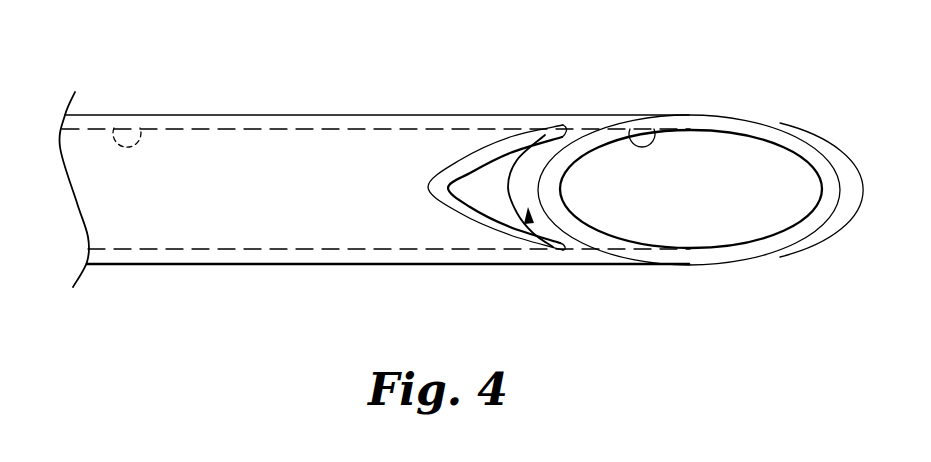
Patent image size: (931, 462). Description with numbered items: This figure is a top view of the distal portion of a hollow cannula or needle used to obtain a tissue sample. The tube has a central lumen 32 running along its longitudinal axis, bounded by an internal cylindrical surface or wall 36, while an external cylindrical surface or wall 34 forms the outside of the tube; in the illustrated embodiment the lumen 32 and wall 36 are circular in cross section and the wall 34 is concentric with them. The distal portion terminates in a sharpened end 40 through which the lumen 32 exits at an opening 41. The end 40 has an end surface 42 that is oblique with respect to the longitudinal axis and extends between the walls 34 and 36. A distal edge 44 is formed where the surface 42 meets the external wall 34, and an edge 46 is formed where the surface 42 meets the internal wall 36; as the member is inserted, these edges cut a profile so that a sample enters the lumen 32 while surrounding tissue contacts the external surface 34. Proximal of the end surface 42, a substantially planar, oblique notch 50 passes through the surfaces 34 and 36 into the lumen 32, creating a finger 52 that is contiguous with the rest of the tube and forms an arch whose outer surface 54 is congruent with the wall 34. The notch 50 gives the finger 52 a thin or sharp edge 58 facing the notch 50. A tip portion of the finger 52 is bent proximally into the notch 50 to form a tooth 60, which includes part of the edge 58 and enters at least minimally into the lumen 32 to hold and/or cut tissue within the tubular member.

The central lumen 32 is at (258, 175).
The external cylindrical surface or wall 34 is at (167, 115).
The internal cylindrical surface or wall 36 is at (121, 113).
The end 40 is at (706, 296).
The opening 41 is at (785, 175).
The end surface 42 is at (695, 122).
The distal edge 44 is at (827, 218).
The edge 46 is at (655, 130).
The notch 50 is at (487, 180).
The finger 52 is at (531, 224).
The outer surface 54 is at (533, 182).
The edge 58 is at (510, 165).
The tooth 60 is at (503, 183).